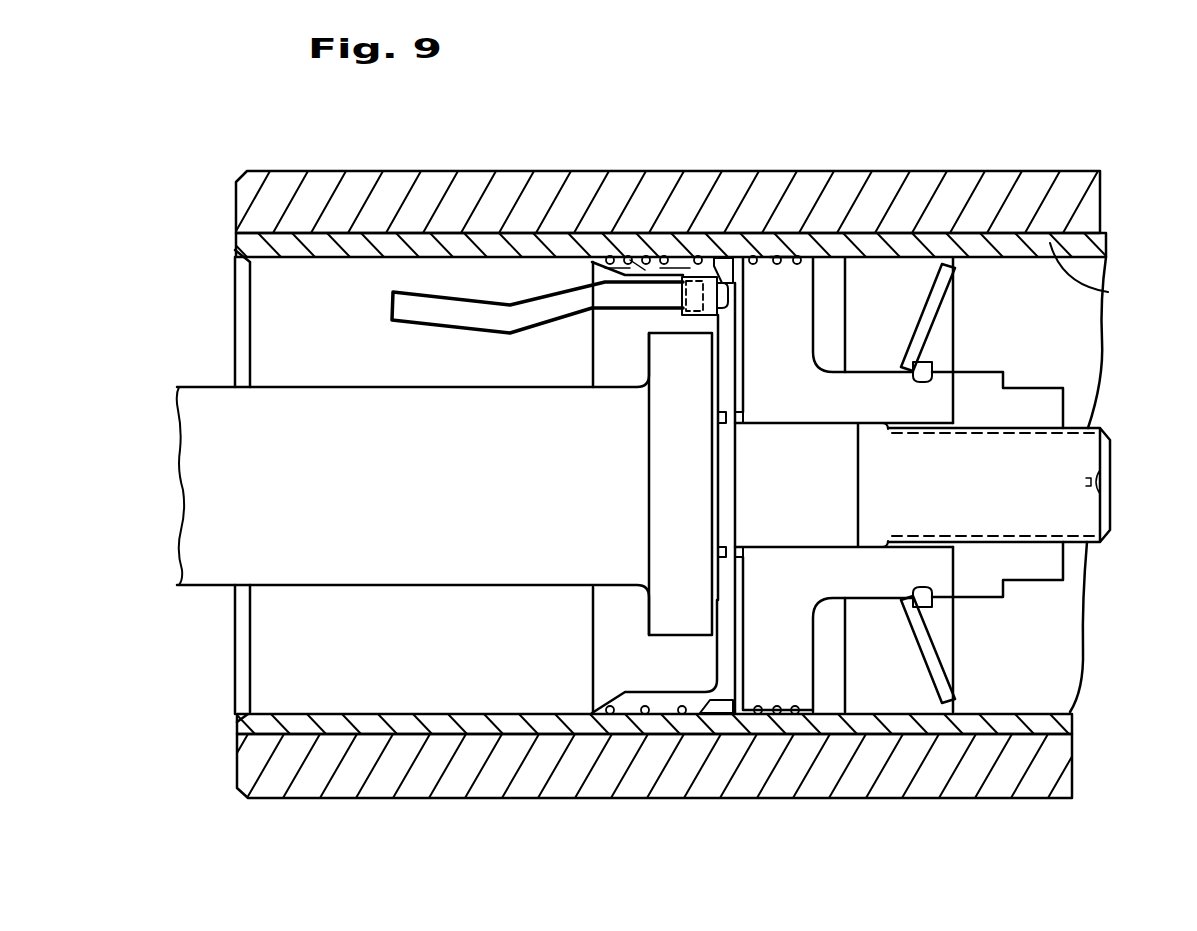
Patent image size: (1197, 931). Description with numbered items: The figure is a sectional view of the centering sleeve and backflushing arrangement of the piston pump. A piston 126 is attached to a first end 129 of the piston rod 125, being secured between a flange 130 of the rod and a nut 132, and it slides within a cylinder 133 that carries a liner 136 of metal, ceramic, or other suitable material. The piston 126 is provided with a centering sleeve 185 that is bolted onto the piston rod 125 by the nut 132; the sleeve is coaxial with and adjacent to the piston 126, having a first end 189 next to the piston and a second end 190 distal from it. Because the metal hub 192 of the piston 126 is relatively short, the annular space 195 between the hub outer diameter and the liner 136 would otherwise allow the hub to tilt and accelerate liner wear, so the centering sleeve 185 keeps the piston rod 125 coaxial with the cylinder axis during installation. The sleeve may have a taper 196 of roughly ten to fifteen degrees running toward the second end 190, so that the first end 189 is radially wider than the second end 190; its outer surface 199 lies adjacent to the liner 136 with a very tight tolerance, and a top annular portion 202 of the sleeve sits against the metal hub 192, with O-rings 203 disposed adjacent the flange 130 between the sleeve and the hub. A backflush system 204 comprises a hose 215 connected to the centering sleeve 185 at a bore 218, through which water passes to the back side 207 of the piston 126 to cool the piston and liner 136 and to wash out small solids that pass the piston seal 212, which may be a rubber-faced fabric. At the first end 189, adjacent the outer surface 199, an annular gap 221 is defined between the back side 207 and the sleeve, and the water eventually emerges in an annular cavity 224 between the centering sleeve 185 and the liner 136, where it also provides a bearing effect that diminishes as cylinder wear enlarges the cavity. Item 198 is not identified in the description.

The piston rod 125 is at (302, 413).
The piston 126 is at (1060, 364).
The first end of the piston rod 129 is at (705, 385).
The flange 130 is at (719, 462).
The nut 132 is at (1068, 412).
The cylinder 133 is at (535, 192).
The liner 136 is at (320, 258).
The centering sleeve 185 is at (665, 262).
The first end of the sleeve 189 is at (744, 393).
The second end of the sleeve 190 is at (620, 257).
The metal hub 192 is at (852, 234).
The annular space 195 is at (785, 240).
The taper 196 is at (592, 272).
The housing bore 198 is at (1106, 335).
The outer surface of the sleeve 199 is at (637, 257).
The top annular portion 202 is at (736, 353).
The O-rings 203 is at (720, 550).
The backflush system 204 is at (655, 322).
The back side of the piston 207 is at (745, 258).
The piston seal 212 is at (895, 700).
The hose 215 is at (433, 323).
The bore 218 is at (728, 281).
The annular gap 221 is at (731, 256).
The annular cavity 224 is at (617, 257).